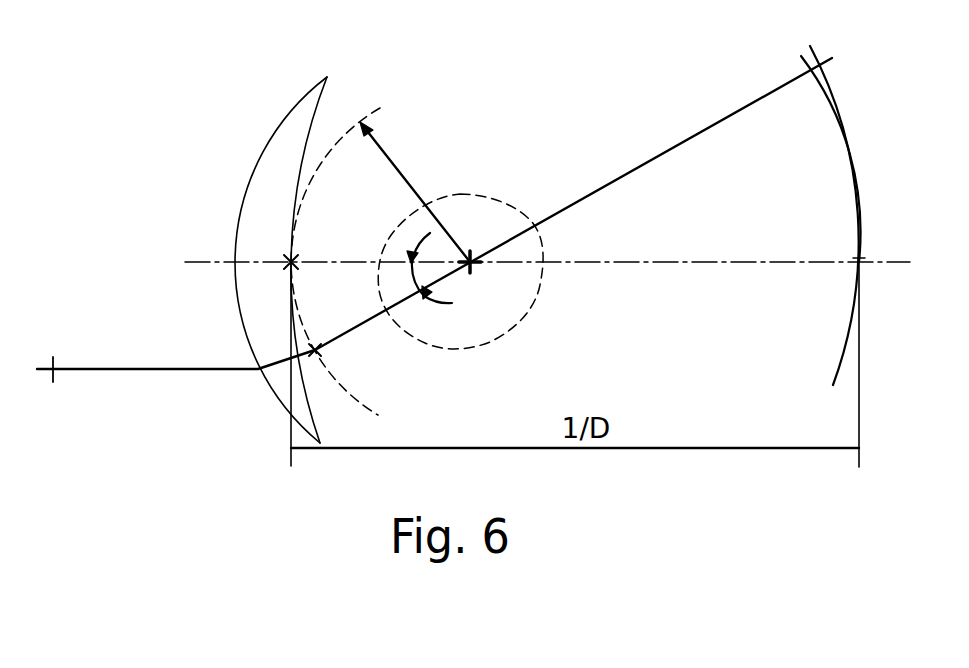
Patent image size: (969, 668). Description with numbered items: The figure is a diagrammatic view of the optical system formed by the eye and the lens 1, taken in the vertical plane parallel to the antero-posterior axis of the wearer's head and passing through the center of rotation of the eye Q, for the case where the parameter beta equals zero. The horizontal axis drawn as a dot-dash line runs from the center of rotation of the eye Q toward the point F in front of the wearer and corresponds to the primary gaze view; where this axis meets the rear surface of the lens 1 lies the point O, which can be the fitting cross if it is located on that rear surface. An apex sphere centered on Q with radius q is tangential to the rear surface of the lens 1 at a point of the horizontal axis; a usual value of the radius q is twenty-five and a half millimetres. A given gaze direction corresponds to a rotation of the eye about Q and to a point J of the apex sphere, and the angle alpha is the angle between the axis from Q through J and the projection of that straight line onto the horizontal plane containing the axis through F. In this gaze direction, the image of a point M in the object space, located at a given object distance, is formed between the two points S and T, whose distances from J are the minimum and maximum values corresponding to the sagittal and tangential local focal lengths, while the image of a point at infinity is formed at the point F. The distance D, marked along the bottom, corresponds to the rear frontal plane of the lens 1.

The lens 1 is at (266, 383).
The radius q' of the apex sphere q is at (415, 192).
The center of rotation of the eye Q' Q is at (475, 245).
The angle α alpha is at (429, 279).
The point M in the object space M is at (52, 386).
The point O is at (281, 248).
The point J of the apex sphere J is at (325, 355).
The point S is at (834, 203).
The point T is at (816, 152).
The point F' F is at (847, 248).